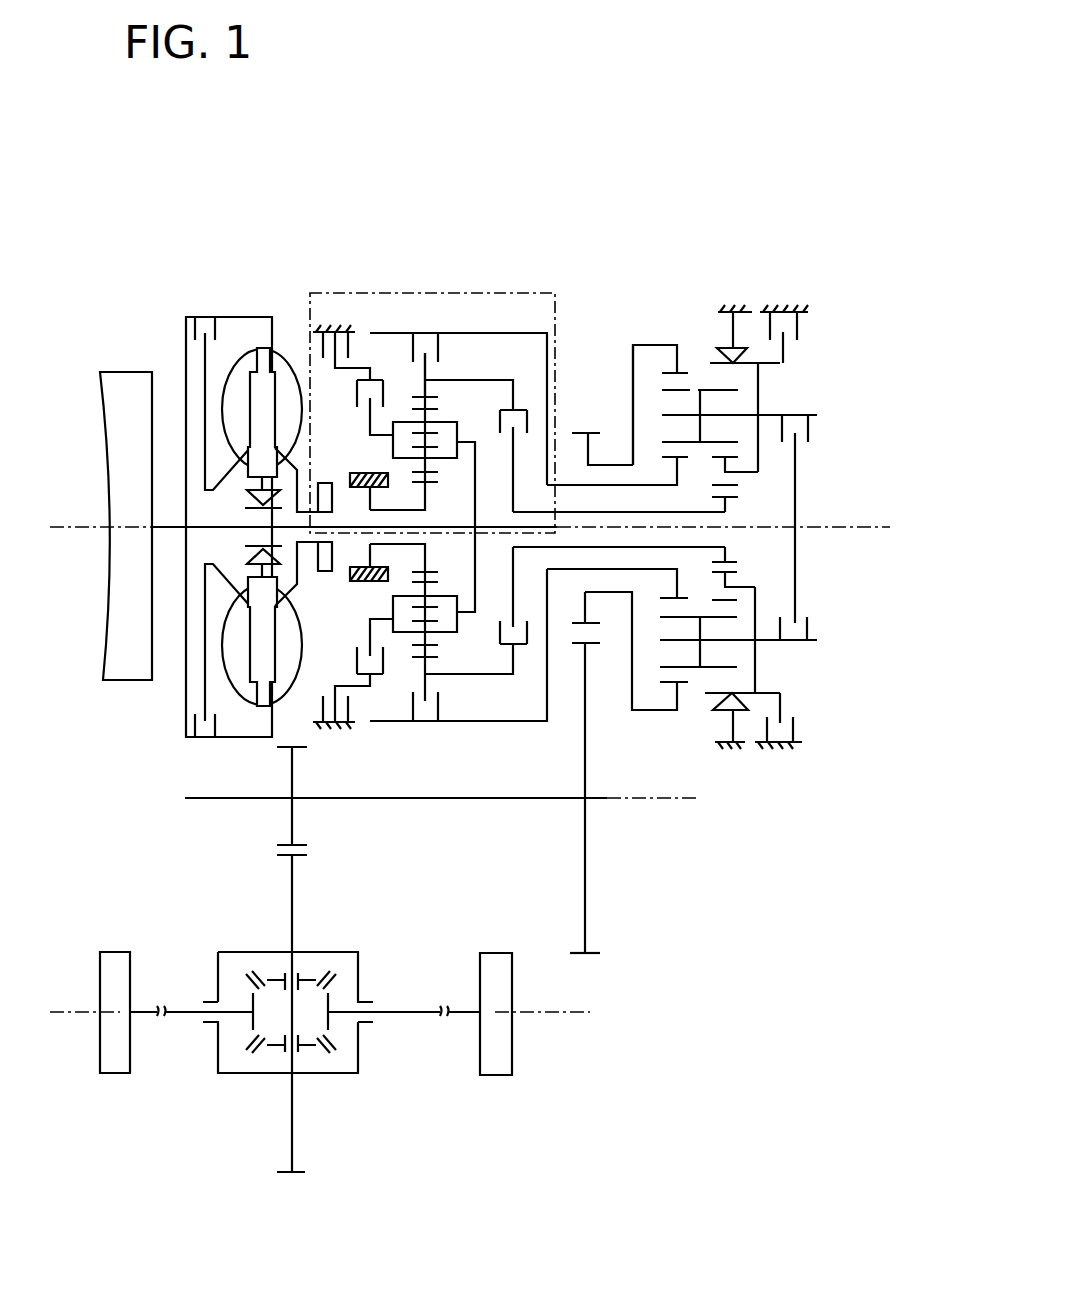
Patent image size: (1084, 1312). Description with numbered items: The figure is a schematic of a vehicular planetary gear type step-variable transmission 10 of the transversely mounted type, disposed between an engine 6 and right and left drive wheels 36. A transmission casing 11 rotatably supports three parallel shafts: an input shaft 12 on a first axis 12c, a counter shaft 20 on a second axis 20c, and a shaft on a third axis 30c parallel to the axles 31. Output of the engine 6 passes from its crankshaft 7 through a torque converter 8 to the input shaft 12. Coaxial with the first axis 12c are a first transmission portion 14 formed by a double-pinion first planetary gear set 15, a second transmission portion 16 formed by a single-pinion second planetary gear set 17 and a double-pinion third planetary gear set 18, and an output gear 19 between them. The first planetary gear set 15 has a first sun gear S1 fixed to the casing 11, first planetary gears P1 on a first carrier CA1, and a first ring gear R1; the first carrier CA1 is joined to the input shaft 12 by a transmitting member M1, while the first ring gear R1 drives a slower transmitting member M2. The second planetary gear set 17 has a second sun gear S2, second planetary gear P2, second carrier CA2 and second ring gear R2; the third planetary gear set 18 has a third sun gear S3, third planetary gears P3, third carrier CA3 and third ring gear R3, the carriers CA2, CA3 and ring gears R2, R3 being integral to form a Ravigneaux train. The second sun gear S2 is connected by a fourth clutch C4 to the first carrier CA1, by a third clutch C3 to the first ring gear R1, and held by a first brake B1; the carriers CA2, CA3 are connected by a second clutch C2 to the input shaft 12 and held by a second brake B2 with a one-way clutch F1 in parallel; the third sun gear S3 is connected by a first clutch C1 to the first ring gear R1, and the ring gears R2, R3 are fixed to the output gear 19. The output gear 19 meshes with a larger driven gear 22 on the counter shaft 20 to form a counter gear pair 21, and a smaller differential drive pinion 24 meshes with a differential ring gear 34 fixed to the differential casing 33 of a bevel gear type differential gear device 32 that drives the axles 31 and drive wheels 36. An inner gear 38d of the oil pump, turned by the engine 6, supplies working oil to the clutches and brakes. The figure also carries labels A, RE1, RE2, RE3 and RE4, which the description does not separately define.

The engine 6 is at (117, 382).
The crankshaft 7 is at (169, 524).
The torque converter 8 is at (255, 300).
The vehicular planetary gear type step-variable transmission 10 is at (579, 158).
The transmission casing 11 is at (350, 574).
The input shaft 12 is at (233, 528).
The first axis 12c is at (880, 527).
The first transmission portion 14 is at (453, 224).
The first planetary gear set 15 is at (421, 310).
The second transmission portion 16 is at (719, 242).
The second planetary gear set 17 is at (673, 296).
The third planetary gear set 18 is at (728, 284).
The output gear 19 is at (577, 432).
The counter shaft 20 is at (402, 795).
The second axis 20c is at (680, 800).
The counter gear pair 21 is at (605, 632).
The driven gear 22 is at (590, 957).
The differential drive pinion 24 is at (310, 848).
The third axis 30c is at (562, 1018).
The axles 31 is at (180, 1010).
The differential gear device 32 is at (307, 1060).
The differential casing 33 is at (230, 1075).
The differential ring gear 34 is at (305, 1173).
The drive wheels 36 is at (115, 1063).
The inner gear 38d is at (322, 573).
The first transmitting unit A is at (334, 286).
The first brake B1 is at (341, 341).
The second brake B2 is at (784, 513).
The first clutch C1 is at (476, 527).
The second clutch C2 is at (811, 527).
The third clutch C3 is at (458, 527).
The fourth clutch C4 is at (357, 527).
The first carrier CA1 is at (393, 446).
The second carrier CA2 is at (768, 511).
The third carrier CA3 is at (731, 414).
The one-way clutch F1 is at (735, 523).
The transmitting member M1 is at (479, 503).
The transmitting member M2 is at (420, 392).
The first planetary gears P1 is at (428, 472).
The second planetary gear P2 is at (672, 528).
The third planetary gears P3 is at (660, 444).
The first ring gear R1 is at (439, 397).
The second ring gear R2 is at (636, 501).
The third ring gear R3 is at (684, 343).
The first rotary element RE1 is at (631, 490).
The second rotary element RE2 is at (766, 378).
The third rotary element RE3 is at (630, 372).
The fourth rotary element RE4 is at (704, 519).
The first sun gear S1 is at (433, 487).
The second sun gear S2 is at (684, 462).
The third sun gear S3 is at (728, 495).